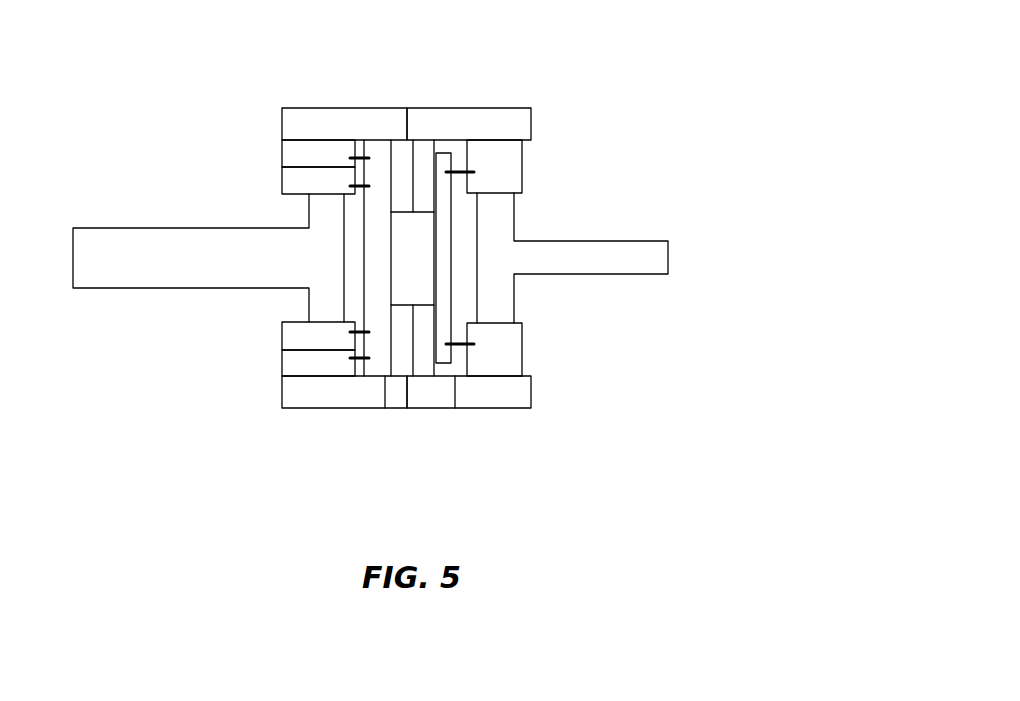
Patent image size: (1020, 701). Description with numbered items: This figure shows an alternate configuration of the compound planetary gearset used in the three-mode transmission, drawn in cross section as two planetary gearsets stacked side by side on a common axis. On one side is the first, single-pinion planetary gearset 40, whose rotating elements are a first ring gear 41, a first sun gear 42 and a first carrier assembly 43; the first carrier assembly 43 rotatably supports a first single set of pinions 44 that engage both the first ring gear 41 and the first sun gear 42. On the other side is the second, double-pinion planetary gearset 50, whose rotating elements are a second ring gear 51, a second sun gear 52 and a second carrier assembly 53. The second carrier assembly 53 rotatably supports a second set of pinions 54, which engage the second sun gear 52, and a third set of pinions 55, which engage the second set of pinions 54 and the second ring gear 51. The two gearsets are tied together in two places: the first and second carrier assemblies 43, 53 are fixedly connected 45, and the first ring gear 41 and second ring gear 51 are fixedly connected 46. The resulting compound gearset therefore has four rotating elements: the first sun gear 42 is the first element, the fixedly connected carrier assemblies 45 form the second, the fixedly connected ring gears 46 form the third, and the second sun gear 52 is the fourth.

The first planetary gearset 40 is at (672, 204).
The first ring gear 41 is at (531, 124).
The first sun gear 42 is at (572, 242).
The first carrier assembly 43 is at (441, 160).
The first single set of pinions 44 is at (522, 168).
The fixedly connected carrier assemblies 45 is at (413, 212).
The fixedly connected ring gears 46 is at (455, 408).
The second planetary gearset 50 is at (195, 276).
The second ring gear 51 is at (333, 108).
The second sun gear 52 is at (157, 228).
The second carrier assembly 53 is at (375, 163).
The second set of pinions 54 is at (282, 178).
The third set of pinions 55 is at (282, 149).